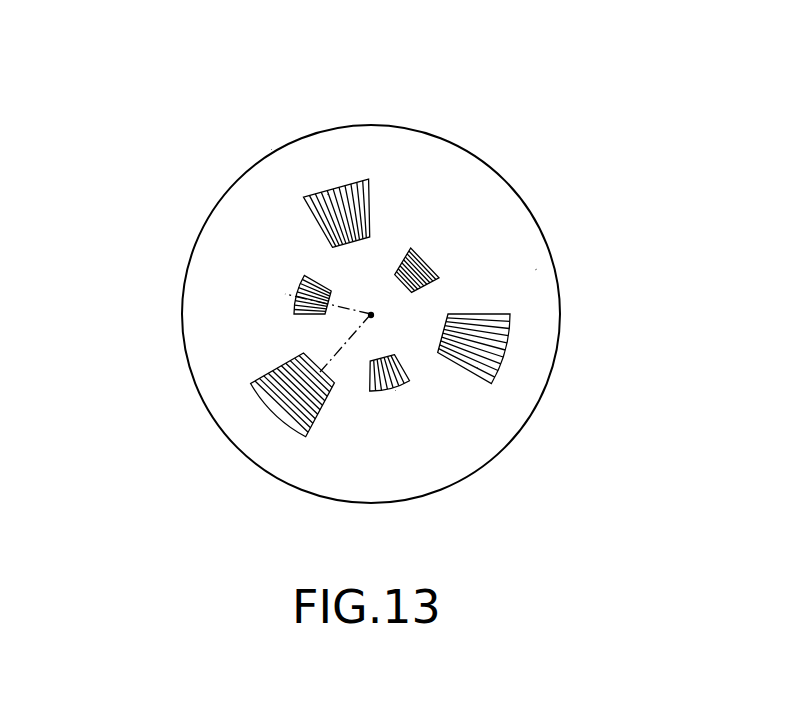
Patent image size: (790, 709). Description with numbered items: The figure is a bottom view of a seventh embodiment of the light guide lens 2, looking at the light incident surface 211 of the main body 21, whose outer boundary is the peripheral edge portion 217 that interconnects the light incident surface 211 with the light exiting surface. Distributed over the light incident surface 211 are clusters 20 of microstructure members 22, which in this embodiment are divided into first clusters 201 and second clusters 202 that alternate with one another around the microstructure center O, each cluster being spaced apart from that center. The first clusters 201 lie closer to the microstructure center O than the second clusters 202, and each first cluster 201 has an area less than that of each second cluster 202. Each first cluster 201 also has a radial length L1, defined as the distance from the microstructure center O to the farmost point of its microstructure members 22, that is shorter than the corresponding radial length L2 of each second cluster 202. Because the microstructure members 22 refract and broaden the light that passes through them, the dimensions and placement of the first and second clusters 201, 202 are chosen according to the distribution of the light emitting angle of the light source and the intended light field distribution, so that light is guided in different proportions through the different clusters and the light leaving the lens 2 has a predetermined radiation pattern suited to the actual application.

The light guide lens 2 is at (187, 190).
The clusters 20 is at (377, 186).
The main body 21 is at (533, 217).
The microstructure members 22 is at (362, 184).
The first clusters 201 is at (395, 390).
The second clusters 202 is at (477, 367).
The light incident surface 211 is at (535, 271).
The peripheral edge portion 217 is at (272, 150).
The microstructure center O is at (371, 315).
The radial length of first cluster L1 is at (305, 273).
The radial length of second cluster L2 is at (372, 316).